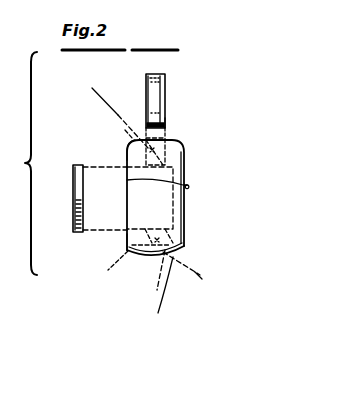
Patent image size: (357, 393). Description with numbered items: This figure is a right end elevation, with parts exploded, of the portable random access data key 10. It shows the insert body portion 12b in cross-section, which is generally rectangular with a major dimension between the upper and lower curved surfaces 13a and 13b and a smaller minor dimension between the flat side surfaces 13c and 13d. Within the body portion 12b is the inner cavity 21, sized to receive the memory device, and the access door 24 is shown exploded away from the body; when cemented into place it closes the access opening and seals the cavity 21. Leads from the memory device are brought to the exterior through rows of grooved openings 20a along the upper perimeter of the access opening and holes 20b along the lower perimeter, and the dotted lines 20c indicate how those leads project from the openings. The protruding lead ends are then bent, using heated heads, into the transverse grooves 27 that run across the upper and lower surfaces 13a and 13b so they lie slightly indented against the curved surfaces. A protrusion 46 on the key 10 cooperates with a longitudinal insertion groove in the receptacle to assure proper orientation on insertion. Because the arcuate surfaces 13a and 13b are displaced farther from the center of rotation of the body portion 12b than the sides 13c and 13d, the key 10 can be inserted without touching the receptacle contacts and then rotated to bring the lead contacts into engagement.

The key 10 is at (123, 270).
The insert body portion 12b is at (127, 238).
The upper curved surface 13a is at (133, 136).
The lower curved surface 13b is at (159, 309).
The flat side surface 13c is at (127, 152).
The flat side surface 13d is at (142, 184).
The grooved openings 20a is at (163, 124).
The holes 20b is at (158, 287).
The dotted lines 20c is at (100, 97).
The inner cavity 21 is at (163, 212).
The access door 24 is at (72, 176).
The transverse grooves 27 is at (168, 143).
The protrusion 46 is at (147, 97).